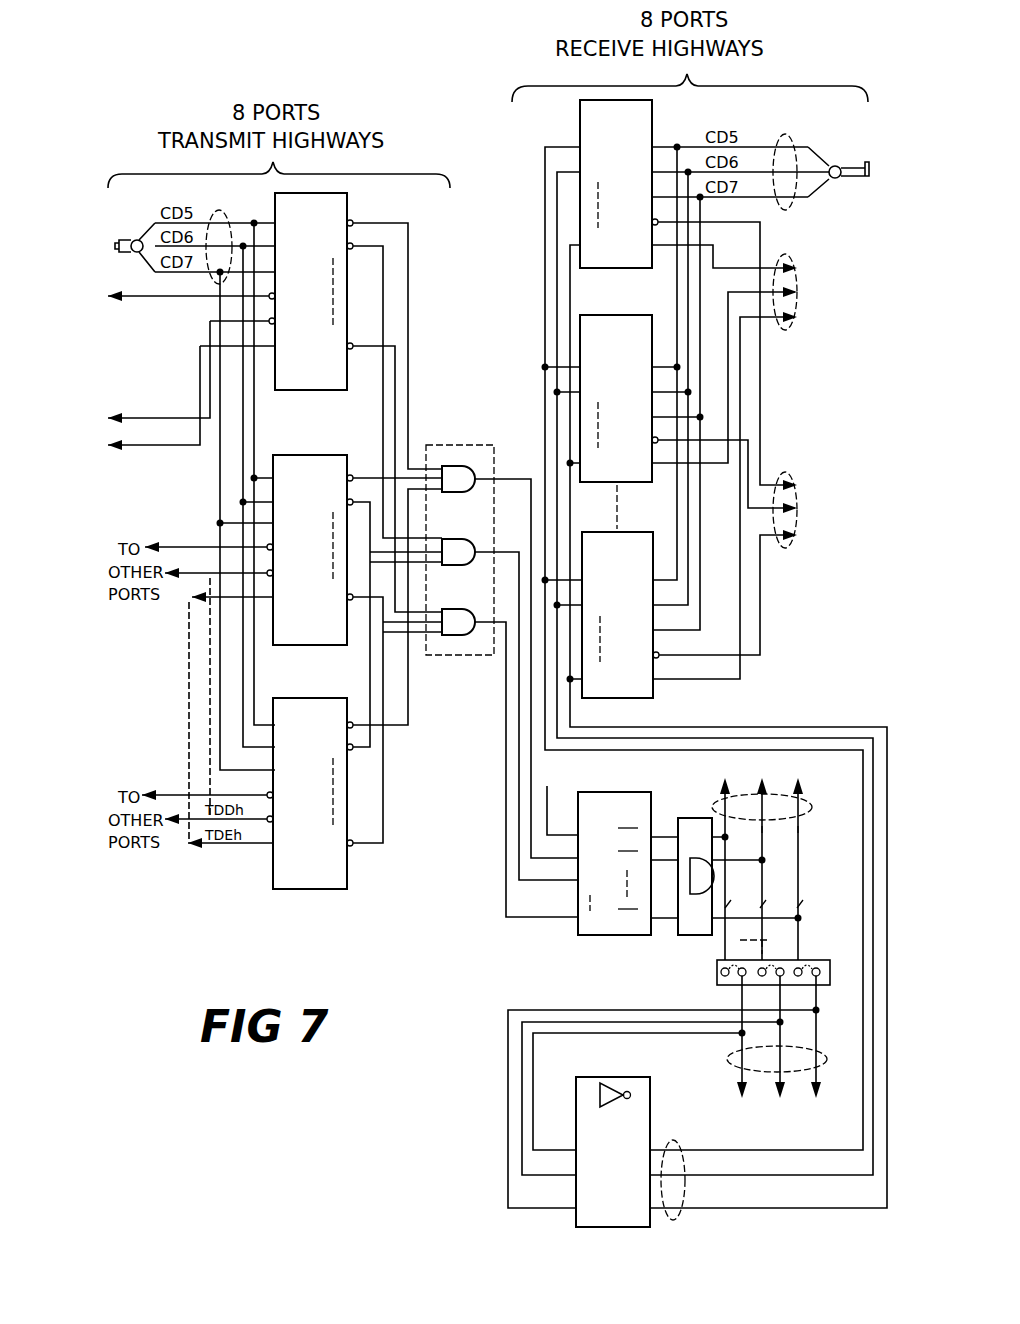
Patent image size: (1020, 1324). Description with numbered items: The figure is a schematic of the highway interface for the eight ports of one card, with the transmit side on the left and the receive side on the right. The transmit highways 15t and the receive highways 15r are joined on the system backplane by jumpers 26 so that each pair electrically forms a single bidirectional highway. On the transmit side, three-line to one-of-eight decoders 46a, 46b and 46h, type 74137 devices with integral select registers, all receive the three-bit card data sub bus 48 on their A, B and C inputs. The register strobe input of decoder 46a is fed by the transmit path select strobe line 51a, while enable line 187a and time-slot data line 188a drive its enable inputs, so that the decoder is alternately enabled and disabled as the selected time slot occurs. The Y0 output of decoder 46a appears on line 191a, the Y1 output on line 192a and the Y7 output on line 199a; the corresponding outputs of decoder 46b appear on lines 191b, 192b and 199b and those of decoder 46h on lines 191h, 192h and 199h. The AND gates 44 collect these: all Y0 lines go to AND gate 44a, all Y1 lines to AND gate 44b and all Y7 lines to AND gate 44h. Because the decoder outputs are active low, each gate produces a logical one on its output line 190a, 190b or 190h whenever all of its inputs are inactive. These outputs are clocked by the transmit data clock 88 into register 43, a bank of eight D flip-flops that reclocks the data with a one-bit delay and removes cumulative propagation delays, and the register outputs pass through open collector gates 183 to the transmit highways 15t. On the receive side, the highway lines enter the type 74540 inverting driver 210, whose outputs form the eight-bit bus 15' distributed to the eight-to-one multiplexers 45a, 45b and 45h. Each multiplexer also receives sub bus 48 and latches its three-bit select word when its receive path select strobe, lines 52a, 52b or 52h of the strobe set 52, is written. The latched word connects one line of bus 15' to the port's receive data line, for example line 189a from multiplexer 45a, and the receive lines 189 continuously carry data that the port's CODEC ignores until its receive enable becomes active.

The card data sub bus 48 is at (220, 222).
The decoder 46a is at (347, 194).
The decoder 46b is at (272, 462).
The decoder 46h is at (270, 706).
The transmit path select strobe line 51a is at (200, 272).
The time slot data line 188a is at (200, 330).
The transmit enable line 187a is at (200, 355).
The Y1 output line 192a is at (382, 278).
The Y0 output line 191a is at (408, 268).
The Y7 output line 199a is at (383, 384).
The Y0 output line 191b is at (360, 472).
The Y1 output line 192b is at (427, 545).
The Y7 output line 199b is at (372, 644).
The Y0 output line 191h is at (362, 698).
The Y1 output line 192h is at (372, 746).
The Y7 output line 199h is at (358, 850).
The AND gates 44 is at (426, 660).
The AND gate 44a is at (470, 485).
The AND gate 44b is at (450, 560).
The AND gate 44h is at (474, 610).
The output line 190a is at (528, 671).
The output line 190b is at (520, 872).
The output line 190h is at (510, 900).
The transmit data clock 88 is at (580, 800).
The multiplexer 45a is at (652, 106).
The multiplexer 45b is at (582, 320).
The multiplexer 45h is at (578, 536).
The receive data line 189a is at (780, 262).
The receive data lines 189 is at (788, 330).
The receive path select strobe line 52a is at (762, 408).
The receive path select strobe line 52b is at (746, 474).
The receive path select strobe line 52h is at (688, 656).
The receive path select strobe lines 52 is at (772, 554).
The register 43 is at (578, 928).
The open collector gates 183 is at (678, 824).
The transmit highways 15t is at (812, 808).
The jumpers 26 is at (717, 980).
The receive highways 15r is at (828, 1054).
The inverting driver 210 is at (604, 1078).
The driver output bus 15' is at (698, 1172).